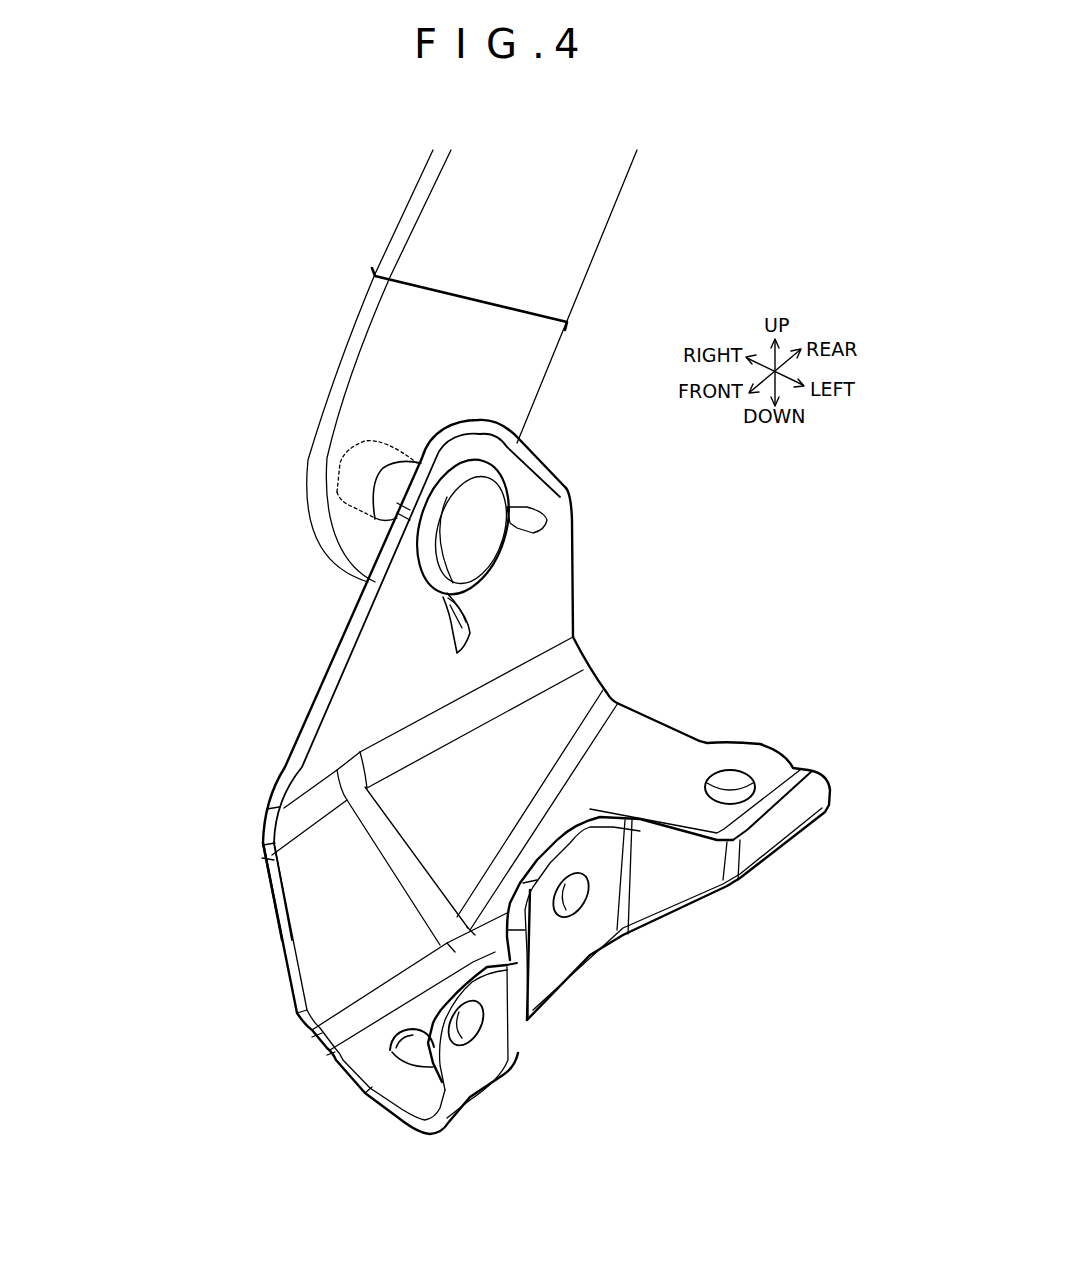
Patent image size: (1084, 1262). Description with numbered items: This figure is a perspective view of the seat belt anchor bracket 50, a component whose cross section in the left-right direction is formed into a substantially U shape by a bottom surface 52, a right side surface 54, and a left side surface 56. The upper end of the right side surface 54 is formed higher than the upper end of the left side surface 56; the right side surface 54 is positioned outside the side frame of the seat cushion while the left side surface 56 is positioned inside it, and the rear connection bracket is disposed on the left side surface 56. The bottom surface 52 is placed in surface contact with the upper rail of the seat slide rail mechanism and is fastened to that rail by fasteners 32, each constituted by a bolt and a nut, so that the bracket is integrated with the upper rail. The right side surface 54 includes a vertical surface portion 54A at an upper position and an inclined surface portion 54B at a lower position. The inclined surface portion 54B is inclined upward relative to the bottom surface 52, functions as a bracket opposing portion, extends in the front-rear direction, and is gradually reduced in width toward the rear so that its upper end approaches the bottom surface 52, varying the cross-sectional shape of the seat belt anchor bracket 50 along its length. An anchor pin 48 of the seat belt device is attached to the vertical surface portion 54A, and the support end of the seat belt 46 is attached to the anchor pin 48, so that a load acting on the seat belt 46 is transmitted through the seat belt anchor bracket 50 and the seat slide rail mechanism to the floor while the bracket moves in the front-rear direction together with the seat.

The seat belt 46 is at (560, 240).
The anchor pin 48 is at (356, 484).
The seat belt anchor bracket 50 is at (647, 606).
The fastener 32 is at (727, 788).
The right side surface 54 is at (371, 791).
The vertical surface portion 54A is at (348, 735).
The inclined surface portion 54B is at (322, 858).
The bottom surface 52 is at (415, 1086).
The left side surface 56 is at (580, 930).